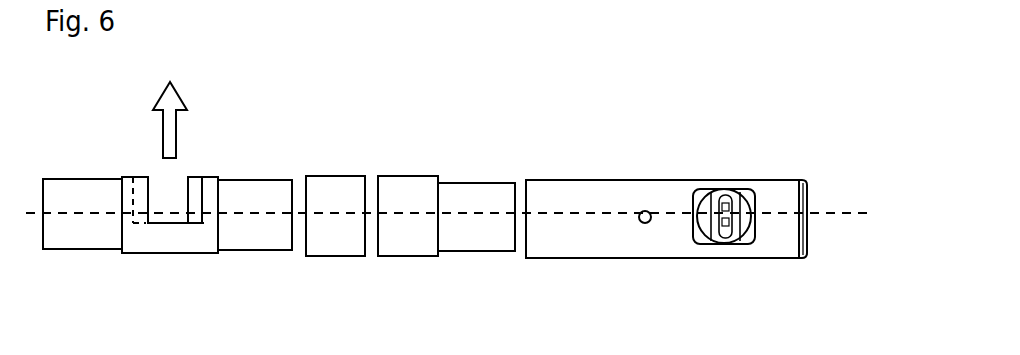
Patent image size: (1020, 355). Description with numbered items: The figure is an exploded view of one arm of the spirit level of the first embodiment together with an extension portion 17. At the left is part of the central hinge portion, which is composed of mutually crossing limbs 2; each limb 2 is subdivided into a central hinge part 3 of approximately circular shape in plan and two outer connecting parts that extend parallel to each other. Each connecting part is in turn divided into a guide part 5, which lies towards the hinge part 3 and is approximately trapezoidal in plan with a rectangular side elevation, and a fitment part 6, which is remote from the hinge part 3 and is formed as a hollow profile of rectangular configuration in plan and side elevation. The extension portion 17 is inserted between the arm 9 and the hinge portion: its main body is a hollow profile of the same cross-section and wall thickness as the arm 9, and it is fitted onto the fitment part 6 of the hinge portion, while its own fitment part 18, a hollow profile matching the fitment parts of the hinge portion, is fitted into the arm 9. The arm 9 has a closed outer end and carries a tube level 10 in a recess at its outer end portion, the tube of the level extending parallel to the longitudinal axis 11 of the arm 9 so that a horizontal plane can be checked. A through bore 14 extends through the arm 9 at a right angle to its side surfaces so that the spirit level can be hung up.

The limb 2 is at (164, 233).
The hinge part 3 is at (168, 233).
The guide part 5 is at (124, 188).
The fitment part 6 is at (117, 170).
The arm 9 is at (671, 205).
The tube level 10 is at (750, 264).
The longitudinal axis 11 is at (448, 171).
The through bore 14 is at (654, 147).
The extension portion 17 is at (410, 261).
The fitment part 18 is at (476, 264).